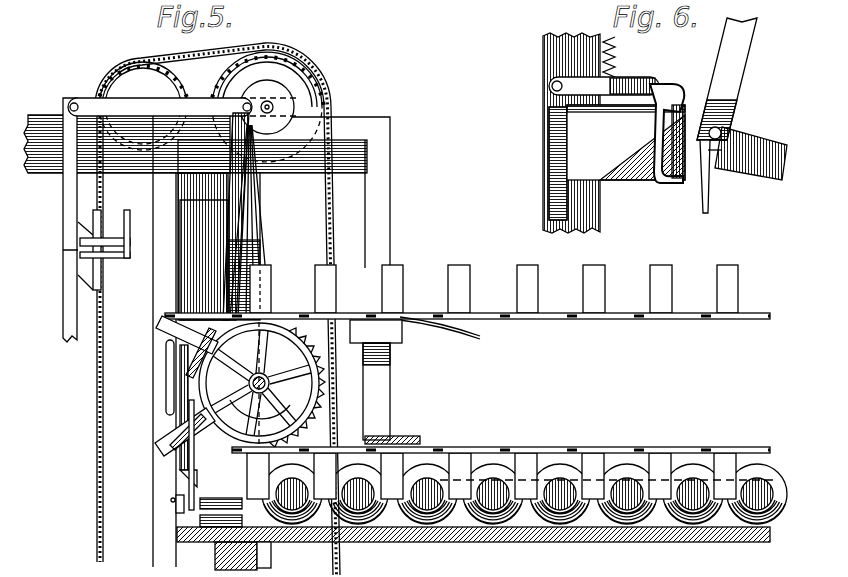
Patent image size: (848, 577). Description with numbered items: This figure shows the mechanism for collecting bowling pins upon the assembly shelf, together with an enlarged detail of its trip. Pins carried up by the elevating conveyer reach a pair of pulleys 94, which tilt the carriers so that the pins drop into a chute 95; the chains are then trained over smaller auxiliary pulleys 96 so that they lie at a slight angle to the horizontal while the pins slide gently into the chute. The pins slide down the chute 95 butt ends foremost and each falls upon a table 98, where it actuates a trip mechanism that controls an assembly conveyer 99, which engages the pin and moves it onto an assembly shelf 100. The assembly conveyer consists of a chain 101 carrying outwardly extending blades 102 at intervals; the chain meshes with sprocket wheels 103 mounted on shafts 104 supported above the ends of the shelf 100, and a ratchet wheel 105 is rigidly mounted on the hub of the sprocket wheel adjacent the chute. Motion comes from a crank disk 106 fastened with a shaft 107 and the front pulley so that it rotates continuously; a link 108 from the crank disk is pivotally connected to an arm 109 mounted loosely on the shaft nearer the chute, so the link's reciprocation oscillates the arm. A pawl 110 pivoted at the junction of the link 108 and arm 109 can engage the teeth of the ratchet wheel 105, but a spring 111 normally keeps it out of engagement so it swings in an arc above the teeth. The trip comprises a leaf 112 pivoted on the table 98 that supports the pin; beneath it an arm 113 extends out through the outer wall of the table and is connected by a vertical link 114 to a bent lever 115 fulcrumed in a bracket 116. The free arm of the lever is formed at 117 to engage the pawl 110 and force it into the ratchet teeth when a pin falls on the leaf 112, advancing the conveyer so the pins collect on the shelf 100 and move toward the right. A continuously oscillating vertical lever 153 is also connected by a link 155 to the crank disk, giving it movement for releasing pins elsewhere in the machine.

In FIG. 5, the pulleys 94 is at (312, 36).
In FIG. 5, the chute 95 is at (190, 291).
In FIG. 5, the auxiliary pulleys 96 is at (143, 106).
In FIG. 5, the table 98 is at (192, 492).
In FIG. 5, the assembly conveyer 99 is at (483, 322).
In FIG. 5, the assembly shelf 100 is at (510, 542).
In FIG. 5, the chain 101 is at (590, 321).
In FIG. 5, the blades 102 is at (517, 285).
In FIG. 5, the sprocket wheels 103 is at (372, 377).
In FIG. 5, the shafts 104 is at (325, 417).
In FIG. 5, the ratchet wheel 105 is at (335, 405).
In FIG. 5, the crank disk 106 is at (300, 88).
In FIG. 5, the shaft 107 is at (275, 107).
In FIG. 5, the link 108 is at (240, 222).
In FIG. 6, the link 108 is at (748, 64).
In FIG. 6, the arm 109 is at (762, 168).
In FIG. 5, the pawl 110 is at (208, 441).
In FIG. 6, the pawl 110 is at (708, 190).
In FIG. 5, the spring 111 is at (168, 427).
In FIG. 6, the spring 111 is at (740, 128).
In FIG. 5, the leaf 112 is at (221, 504).
In FIG. 5, the arm 113 is at (180, 505).
In FIG. 5, the vertical link 114 is at (166, 392).
In FIG. 6, the vertical link 114 is at (562, 160).
In FIG. 5, the bent lever 115 is at (167, 355).
In FIG. 6, the bent lever 115 is at (650, 77).
In FIG. 5, the bracket 116 is at (178, 375).
In FIG. 6, the bracket 116 is at (636, 182).
In FIG. 6, the free arm end 117 is at (689, 157).
In FIG. 5, the vertical lever 153 is at (76, 196).
In FIG. 5, the link 155 is at (88, 100).